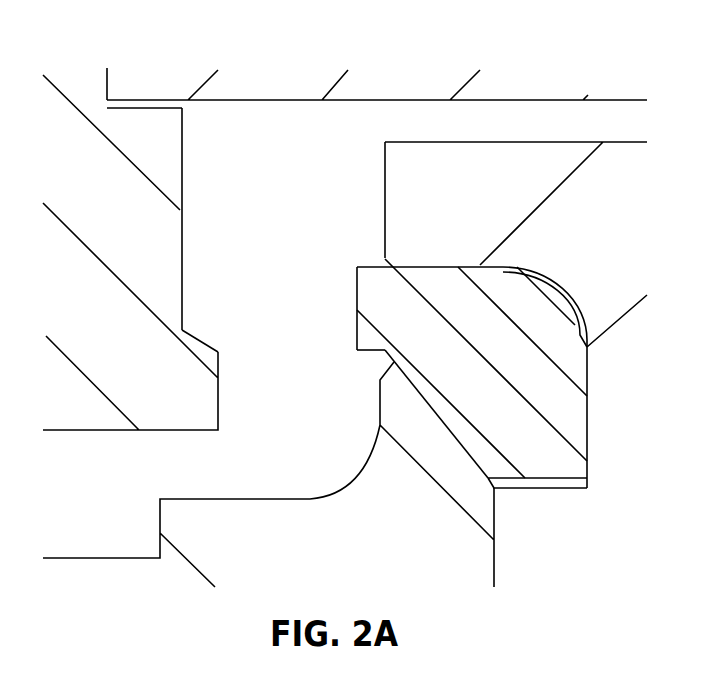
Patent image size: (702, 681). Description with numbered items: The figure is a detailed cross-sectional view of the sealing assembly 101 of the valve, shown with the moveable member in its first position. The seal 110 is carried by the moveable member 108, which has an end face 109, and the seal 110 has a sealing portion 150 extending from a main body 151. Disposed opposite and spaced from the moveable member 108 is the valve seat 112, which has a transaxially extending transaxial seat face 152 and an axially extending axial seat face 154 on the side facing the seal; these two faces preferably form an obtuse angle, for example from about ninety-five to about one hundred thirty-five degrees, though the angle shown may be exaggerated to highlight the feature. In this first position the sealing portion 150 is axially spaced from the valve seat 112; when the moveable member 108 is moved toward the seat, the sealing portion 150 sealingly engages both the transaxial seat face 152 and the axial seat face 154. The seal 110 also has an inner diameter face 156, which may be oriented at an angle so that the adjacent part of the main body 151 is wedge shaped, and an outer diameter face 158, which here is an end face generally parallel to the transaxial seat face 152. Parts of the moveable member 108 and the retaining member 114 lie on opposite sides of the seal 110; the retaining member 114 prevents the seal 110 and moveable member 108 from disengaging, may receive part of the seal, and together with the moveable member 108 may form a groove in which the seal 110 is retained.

The sealing assembly 101 is at (416, 99).
The moveable member 108 is at (441, 203).
The end face 109 is at (379, 199).
The seal 110 is at (462, 373).
The valve seat 112 is at (62, 187).
The retaining member 114 is at (368, 541).
The sealing portion 150 is at (371, 307).
The main body 151 is at (514, 302).
The transaxial seat face 152 is at (181, 252).
The axial seat face 154 is at (195, 343).
The inner diameter face 156 is at (454, 432).
The outer diameter face 158 is at (351, 339).